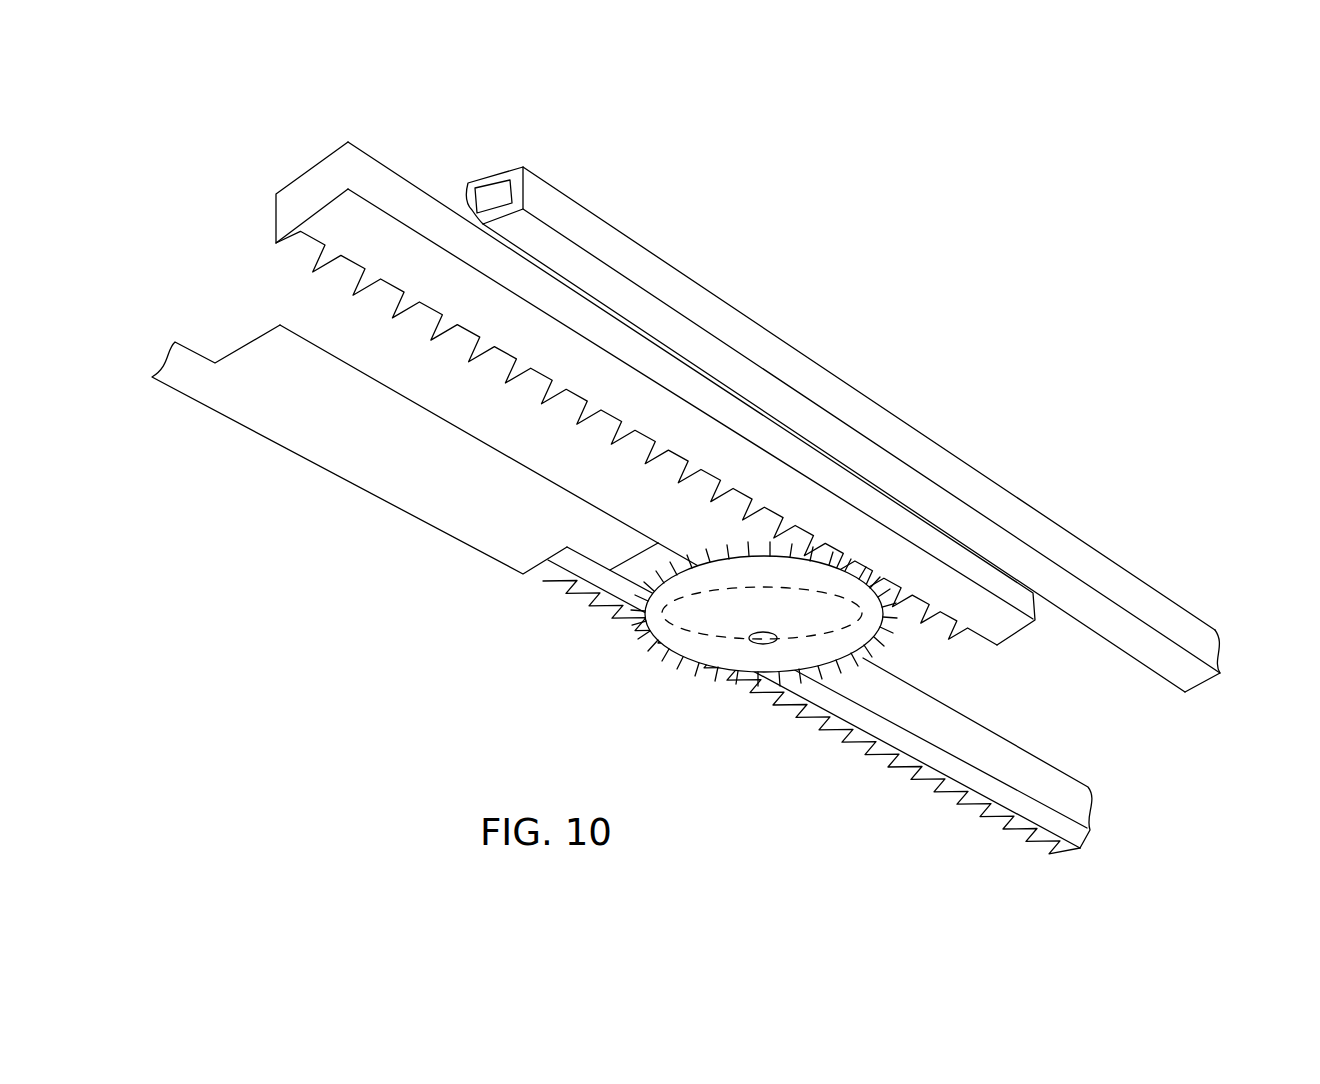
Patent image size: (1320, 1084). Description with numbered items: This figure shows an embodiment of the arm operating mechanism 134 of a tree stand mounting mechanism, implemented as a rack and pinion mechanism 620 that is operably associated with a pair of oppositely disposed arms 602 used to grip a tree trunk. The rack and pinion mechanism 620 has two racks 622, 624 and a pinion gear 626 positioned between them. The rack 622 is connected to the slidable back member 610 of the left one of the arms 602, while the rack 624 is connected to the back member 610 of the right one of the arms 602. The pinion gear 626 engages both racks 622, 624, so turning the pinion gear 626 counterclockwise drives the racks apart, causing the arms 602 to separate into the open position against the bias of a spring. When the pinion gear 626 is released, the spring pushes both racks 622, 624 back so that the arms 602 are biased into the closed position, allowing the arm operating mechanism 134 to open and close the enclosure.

The arm operating mechanism 134 is at (1115, 411).
The oppositely disposed arms 602 is at (193, 402).
The slidable back member 610 is at (352, 485).
The rack and pinion mechanism 620 is at (1157, 513).
The rack 622 is at (385, 232).
The rack 624 is at (958, 807).
The pinion gear 626 is at (676, 640).